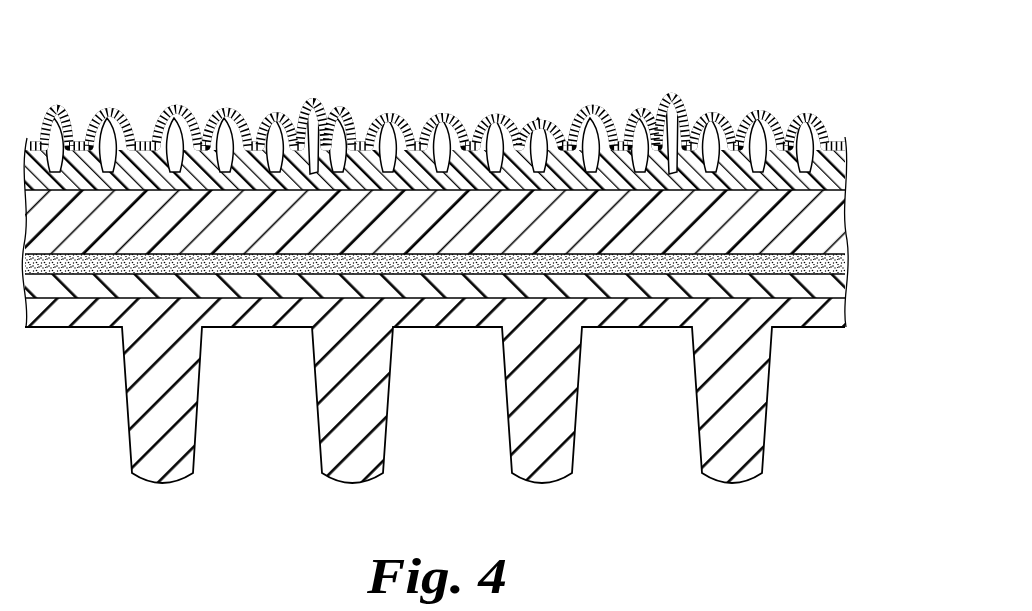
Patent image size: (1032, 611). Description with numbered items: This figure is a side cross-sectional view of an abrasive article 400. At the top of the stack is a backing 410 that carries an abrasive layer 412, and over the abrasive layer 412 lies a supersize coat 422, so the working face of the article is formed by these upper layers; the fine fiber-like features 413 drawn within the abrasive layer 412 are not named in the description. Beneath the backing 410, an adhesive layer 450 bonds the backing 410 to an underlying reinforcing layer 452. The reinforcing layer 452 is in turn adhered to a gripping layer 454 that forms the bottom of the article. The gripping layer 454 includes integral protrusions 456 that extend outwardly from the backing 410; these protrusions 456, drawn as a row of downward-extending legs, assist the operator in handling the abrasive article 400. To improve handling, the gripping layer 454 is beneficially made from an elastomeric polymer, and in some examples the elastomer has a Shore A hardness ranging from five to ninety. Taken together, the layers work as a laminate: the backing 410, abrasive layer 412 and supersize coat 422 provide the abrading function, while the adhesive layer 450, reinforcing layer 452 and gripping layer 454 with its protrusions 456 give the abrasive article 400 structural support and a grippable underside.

The abrasive article 400 is at (478, 277).
The backing 410 is at (848, 207).
The abrasive layer 412 is at (471, 115).
The fibers 413 is at (310, 104).
The supersize coat 422 is at (537, 118).
The adhesive layer 450 is at (835, 264).
The reinforcing layer 452 is at (833, 289).
The gripping layer 454 is at (480, 419).
The integral protrusions 456 is at (731, 467).